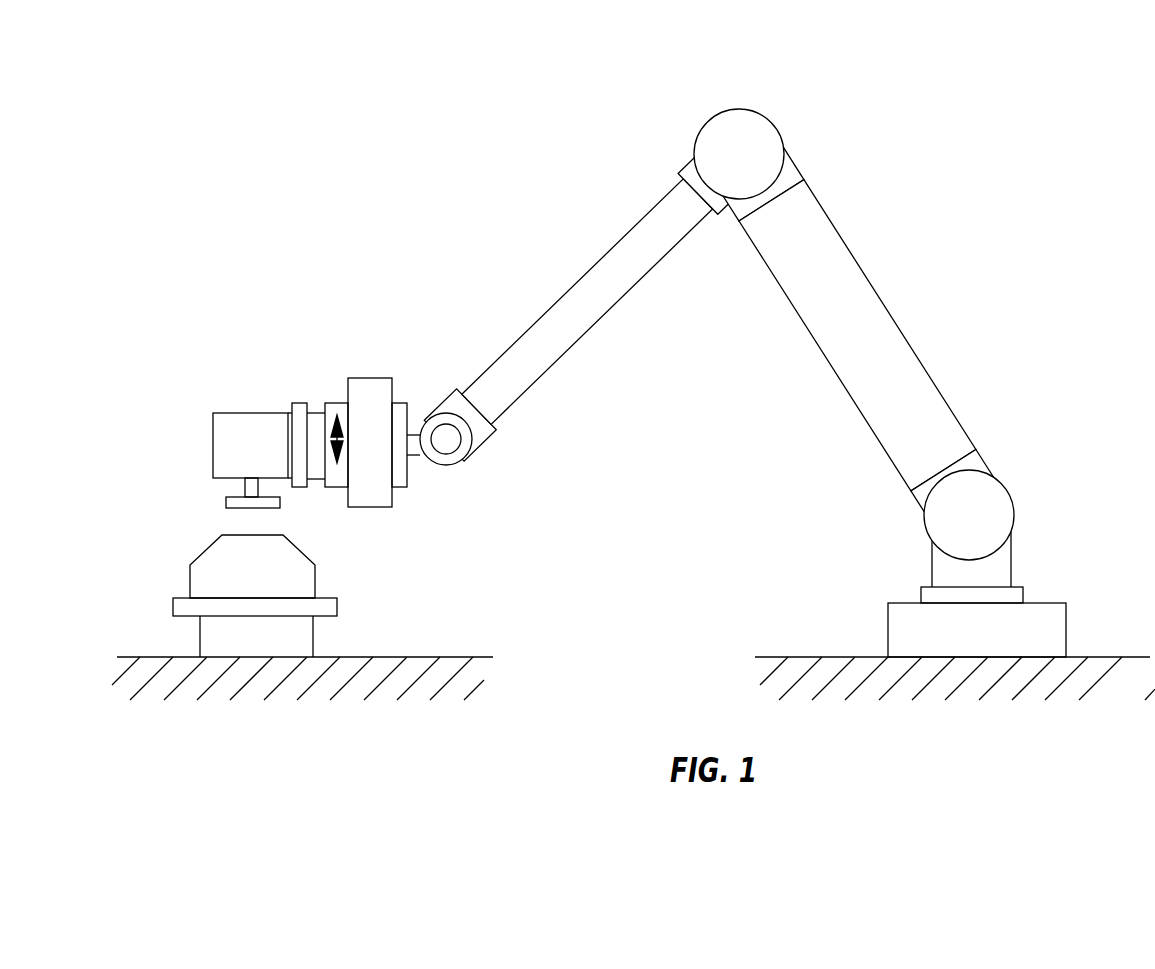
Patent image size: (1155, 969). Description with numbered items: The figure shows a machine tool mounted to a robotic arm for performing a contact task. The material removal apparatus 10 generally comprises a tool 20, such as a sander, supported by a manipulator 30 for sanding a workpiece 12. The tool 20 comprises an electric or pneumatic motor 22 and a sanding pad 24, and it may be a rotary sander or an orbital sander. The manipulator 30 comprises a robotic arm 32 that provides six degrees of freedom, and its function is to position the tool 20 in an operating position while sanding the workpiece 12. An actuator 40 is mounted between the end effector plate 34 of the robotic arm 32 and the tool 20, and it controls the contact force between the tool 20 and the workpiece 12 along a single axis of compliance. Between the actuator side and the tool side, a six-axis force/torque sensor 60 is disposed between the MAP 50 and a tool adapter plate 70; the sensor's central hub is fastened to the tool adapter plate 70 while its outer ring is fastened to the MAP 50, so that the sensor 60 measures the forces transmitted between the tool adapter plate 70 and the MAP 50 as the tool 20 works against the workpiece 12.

The material removal apparatus 10 is at (880, 80).
The workpiece 12 is at (232, 557).
The tool 20 is at (202, 423).
The motor 22 is at (228, 423).
The sanding pad 24 is at (228, 500).
The manipulator 30 is at (860, 201).
The robotic arm 32 is at (640, 233).
The end effector plate 34 is at (408, 468).
The actuator 40 is at (371, 362).
The MAP 50 is at (335, 403).
The force/torque sensor 60 is at (311, 437).
The tool adapter plate 70 is at (296, 405).